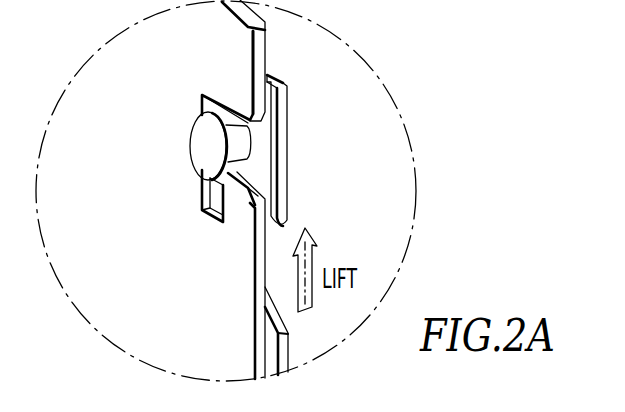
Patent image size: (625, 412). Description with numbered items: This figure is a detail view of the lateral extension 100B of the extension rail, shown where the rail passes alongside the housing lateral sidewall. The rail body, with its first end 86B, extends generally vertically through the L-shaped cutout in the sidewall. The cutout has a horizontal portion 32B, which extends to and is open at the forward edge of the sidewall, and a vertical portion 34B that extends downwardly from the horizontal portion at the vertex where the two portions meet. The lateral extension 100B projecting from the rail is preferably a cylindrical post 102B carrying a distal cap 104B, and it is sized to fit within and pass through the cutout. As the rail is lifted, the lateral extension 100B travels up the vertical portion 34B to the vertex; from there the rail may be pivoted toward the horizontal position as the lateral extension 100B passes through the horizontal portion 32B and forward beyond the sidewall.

The lateral extension 100B is at (178, 103).
The first end 86B is at (288, 101).
The horizontal portion 32B is at (260, 169).
The vertical portion 34B is at (208, 195).
The cylindrical post 102B is at (243, 142).
The distal cap 104B is at (202, 147).